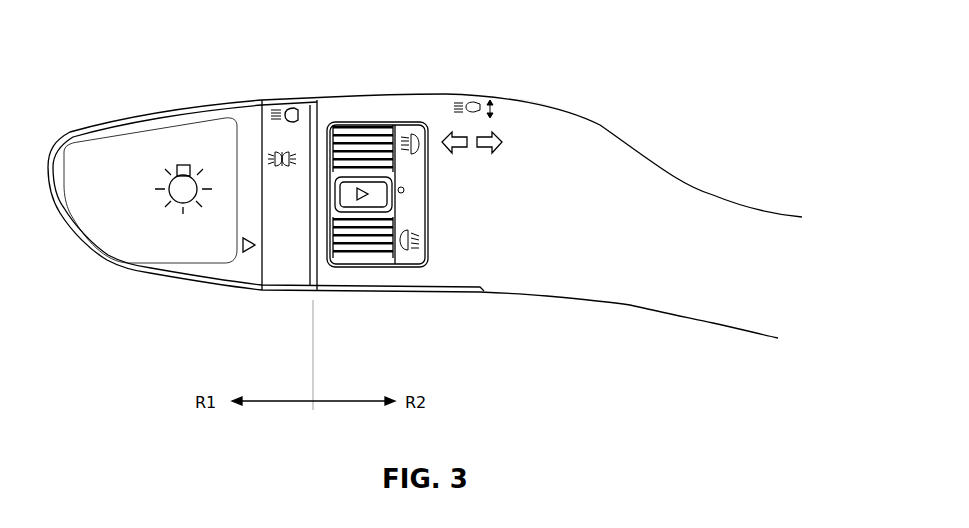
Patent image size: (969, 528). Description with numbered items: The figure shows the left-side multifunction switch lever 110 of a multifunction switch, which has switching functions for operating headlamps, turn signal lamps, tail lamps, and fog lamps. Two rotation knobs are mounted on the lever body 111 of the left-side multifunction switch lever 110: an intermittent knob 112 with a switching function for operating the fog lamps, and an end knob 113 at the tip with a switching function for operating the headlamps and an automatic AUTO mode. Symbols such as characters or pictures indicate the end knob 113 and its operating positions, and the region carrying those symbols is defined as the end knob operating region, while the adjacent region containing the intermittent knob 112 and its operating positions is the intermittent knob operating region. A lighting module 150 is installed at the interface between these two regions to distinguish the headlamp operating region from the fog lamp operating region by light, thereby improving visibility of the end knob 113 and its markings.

The left-side multifunction switch lever 110 is at (592, 114).
The lever body 111 is at (548, 263).
The intermittent knob 112 is at (363, 244).
The end knob 113 is at (133, 277).
The lighting module 150 is at (320, 110).